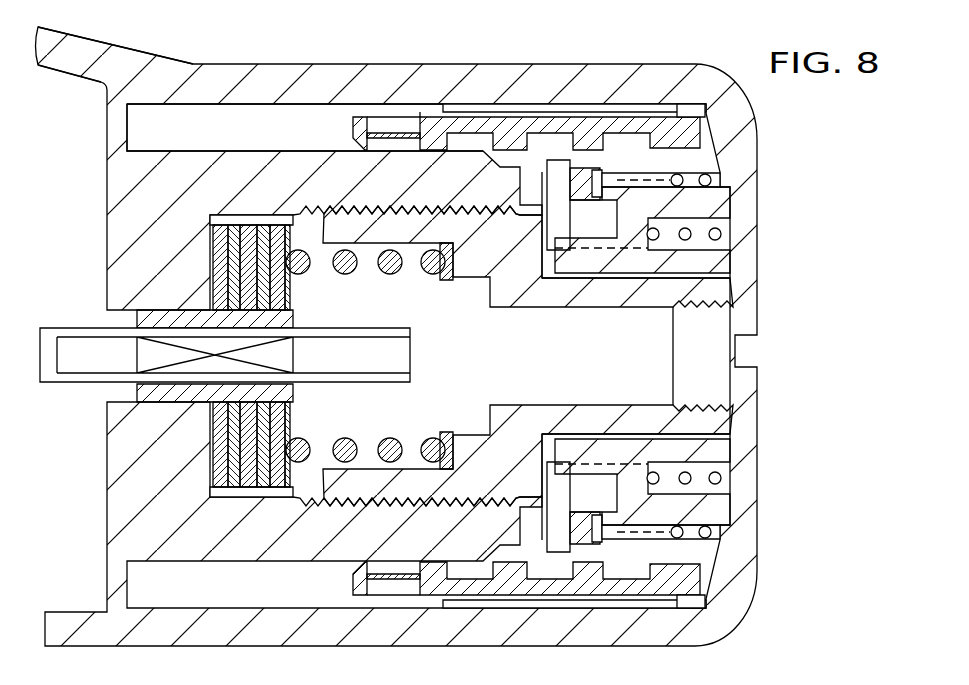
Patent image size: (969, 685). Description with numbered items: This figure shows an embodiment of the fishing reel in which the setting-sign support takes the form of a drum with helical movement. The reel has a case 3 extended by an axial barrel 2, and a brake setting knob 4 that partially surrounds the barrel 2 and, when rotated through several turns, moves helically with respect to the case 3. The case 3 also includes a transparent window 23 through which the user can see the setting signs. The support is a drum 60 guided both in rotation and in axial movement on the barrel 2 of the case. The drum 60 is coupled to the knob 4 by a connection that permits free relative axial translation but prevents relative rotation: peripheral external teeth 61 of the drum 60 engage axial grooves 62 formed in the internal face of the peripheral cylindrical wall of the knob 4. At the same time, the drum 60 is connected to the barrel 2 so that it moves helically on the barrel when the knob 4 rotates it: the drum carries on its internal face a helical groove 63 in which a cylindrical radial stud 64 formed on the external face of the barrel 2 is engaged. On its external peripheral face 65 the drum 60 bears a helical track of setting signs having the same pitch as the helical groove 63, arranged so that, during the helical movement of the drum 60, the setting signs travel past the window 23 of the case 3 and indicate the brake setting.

The barrel 2 is at (188, 172).
The case 3 is at (138, 80).
The brake setting knob 4 is at (745, 155).
The transparent window 23 is at (358, 72).
The drum 60 is at (523, 122).
The peripheral external teeth 61 is at (688, 115).
The axial grooves 62 is at (623, 108).
The helical groove 63 is at (480, 137).
The cylindrical radial stud 64 is at (385, 147).
The external peripheral face 65 is at (419, 100).